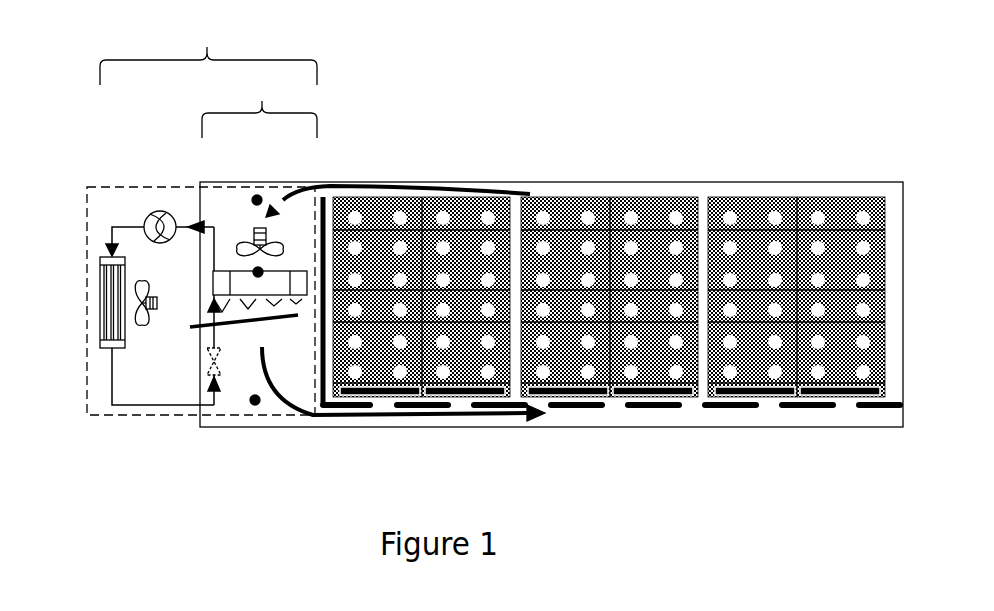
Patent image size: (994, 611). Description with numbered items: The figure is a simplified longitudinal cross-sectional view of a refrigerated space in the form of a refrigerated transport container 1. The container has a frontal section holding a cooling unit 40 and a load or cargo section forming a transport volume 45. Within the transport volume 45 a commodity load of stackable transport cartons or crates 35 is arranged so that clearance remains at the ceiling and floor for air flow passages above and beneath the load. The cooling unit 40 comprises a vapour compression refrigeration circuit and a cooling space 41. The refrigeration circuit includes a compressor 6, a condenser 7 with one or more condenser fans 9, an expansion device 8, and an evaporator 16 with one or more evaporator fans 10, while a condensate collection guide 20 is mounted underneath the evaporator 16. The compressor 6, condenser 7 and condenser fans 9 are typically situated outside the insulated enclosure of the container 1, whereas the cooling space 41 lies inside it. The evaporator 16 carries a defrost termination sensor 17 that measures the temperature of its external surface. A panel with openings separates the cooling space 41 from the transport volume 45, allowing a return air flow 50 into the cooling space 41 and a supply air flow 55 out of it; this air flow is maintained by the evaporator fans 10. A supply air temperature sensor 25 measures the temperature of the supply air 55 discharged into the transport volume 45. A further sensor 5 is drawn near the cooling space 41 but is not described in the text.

The refrigerated transport container 1 is at (795, 467).
The temperature sensor 5 is at (263, 182).
The compressor 6 is at (133, 226).
The condenser 7 is at (100, 302).
The expansion device 8 is at (213, 362).
The condenser fan 9 is at (146, 286).
The evaporator fan 10 is at (258, 272).
The evaporator 16 is at (160, 211).
The defrost termination sensor 17 is at (212, 277).
The condensate collection guide 20 is at (260, 320).
The supply air temperature sensor 25 is at (257, 404).
The stackable transport cartons or crates 35 is at (550, 182).
The cooling unit 40 is at (208, 51).
The cooling space 41 is at (259, 107).
The transport volume 45 is at (550, 182).
The return air flow 50 is at (548, 182).
The supply air flow 55 is at (550, 427).